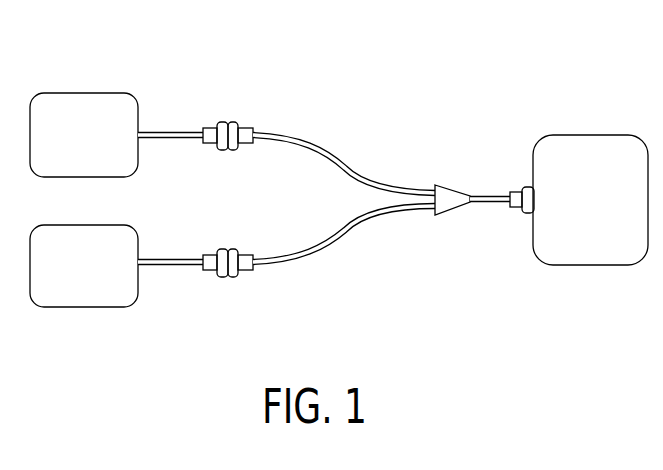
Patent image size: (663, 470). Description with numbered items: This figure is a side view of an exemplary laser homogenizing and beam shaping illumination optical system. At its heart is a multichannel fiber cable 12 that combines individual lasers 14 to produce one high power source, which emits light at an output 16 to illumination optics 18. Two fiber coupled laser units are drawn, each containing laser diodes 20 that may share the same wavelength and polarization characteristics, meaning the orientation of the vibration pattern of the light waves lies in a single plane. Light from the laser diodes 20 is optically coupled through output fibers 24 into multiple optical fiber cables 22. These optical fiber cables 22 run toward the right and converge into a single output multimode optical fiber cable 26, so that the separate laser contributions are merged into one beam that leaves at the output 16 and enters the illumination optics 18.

The multichannel fiber cable 12 is at (393, 169).
The lasers 14 is at (82, 93).
The output 16 is at (518, 190).
The illumination optics 18 is at (581, 211).
The laser diodes 20 is at (141, 199).
The optical fiber cables 22 is at (318, 151).
The output fibers 24 is at (163, 131).
The output multimode optical fiber cable 26 is at (484, 205).